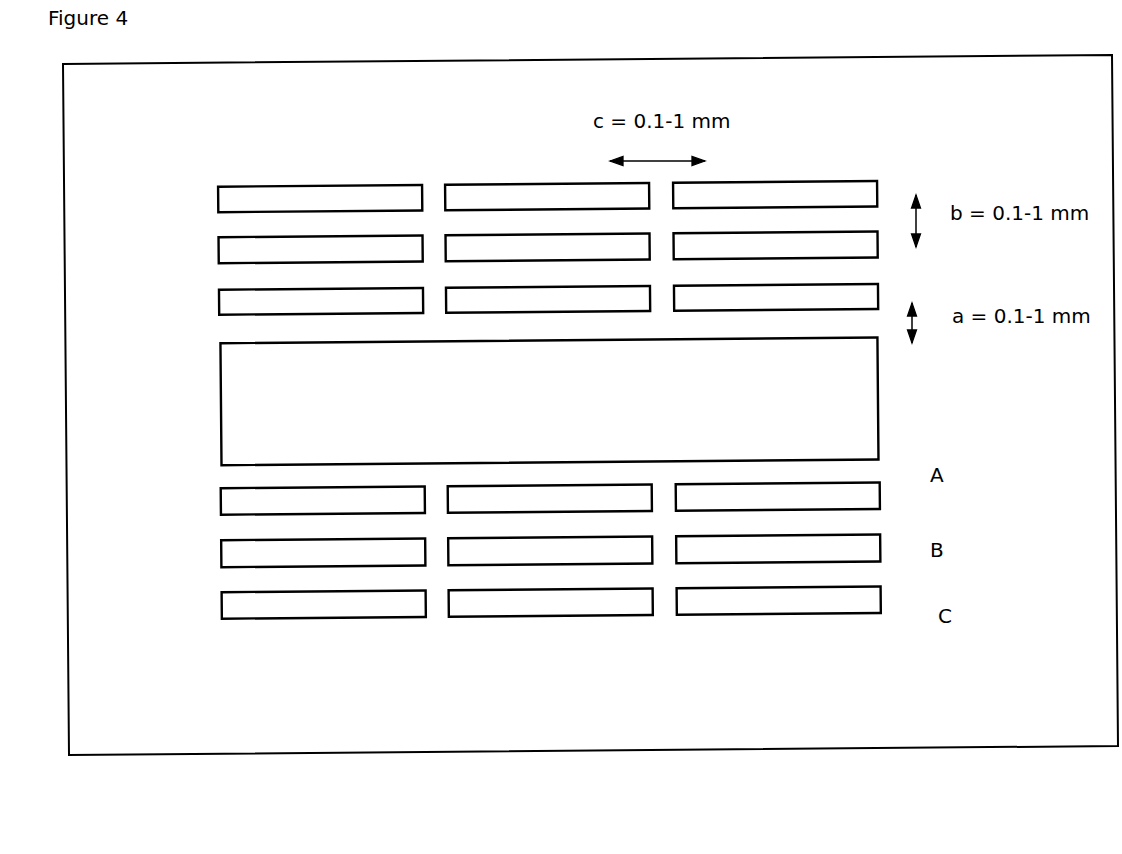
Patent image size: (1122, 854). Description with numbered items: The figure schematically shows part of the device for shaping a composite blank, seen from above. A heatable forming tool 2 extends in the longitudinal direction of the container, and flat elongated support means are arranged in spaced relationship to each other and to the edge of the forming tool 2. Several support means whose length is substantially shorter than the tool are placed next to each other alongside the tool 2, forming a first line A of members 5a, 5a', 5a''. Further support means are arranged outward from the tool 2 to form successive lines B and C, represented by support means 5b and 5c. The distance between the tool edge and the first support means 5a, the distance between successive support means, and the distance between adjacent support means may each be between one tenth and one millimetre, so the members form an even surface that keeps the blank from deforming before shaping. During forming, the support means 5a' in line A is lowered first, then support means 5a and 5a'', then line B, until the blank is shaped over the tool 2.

The heatable forming tool 2 is at (549, 401).
The first support means 5a is at (284, 489).
The first support means 5a' is at (453, 620).
The support means 5a'' is at (684, 648).
The support means 5b is at (512, 541).
The support means 5c is at (509, 602).